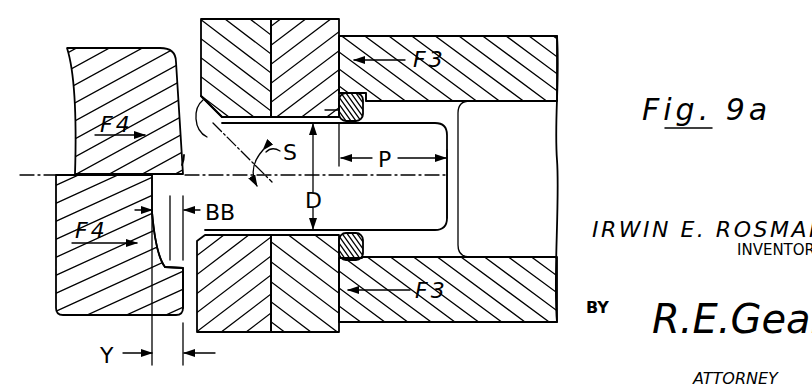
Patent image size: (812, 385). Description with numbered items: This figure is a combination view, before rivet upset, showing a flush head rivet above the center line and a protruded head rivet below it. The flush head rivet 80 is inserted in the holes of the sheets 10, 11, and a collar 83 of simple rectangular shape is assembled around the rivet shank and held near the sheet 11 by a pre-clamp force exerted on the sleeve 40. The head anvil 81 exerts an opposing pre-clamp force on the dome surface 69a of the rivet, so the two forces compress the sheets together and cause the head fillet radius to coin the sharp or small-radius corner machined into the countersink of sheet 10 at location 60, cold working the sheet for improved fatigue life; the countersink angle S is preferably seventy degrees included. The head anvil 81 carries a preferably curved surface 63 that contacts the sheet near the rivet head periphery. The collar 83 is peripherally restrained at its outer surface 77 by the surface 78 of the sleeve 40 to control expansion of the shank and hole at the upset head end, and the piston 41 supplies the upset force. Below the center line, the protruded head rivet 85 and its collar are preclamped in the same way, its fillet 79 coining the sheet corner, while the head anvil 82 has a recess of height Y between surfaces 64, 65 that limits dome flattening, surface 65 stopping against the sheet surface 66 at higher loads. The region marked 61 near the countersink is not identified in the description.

The sheet 10 is at (235, 85).
The sheet 11 is at (307, 89).
The sleeve 40 is at (548, 73).
The piston 41 is at (545, 172).
The location 60 is at (223, 112).
The curved surface 61 is at (216, 126).
The surface 63 is at (175, 82).
The surface 64 is at (150, 248).
The surface 65 is at (182, 284).
The surface of the sheet 66 is at (200, 295).
The dome surface 69a is at (186, 157).
The outer surface 77 is at (364, 108).
The surface 78 is at (362, 91).
The fillet 79 is at (203, 239).
The flush head rivet 80 is at (440, 142).
The head anvil 81 is at (93, 62).
The head anvil 82 is at (57, 258).
The collar 83 is at (327, 110).
The protruded head rivet 85 is at (430, 213).